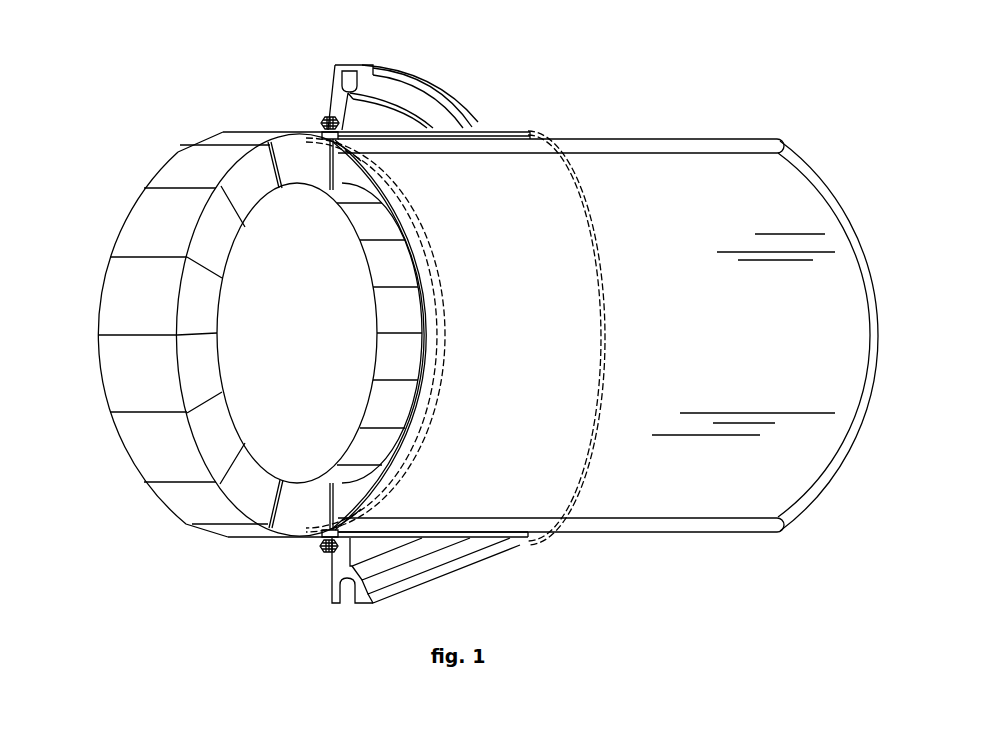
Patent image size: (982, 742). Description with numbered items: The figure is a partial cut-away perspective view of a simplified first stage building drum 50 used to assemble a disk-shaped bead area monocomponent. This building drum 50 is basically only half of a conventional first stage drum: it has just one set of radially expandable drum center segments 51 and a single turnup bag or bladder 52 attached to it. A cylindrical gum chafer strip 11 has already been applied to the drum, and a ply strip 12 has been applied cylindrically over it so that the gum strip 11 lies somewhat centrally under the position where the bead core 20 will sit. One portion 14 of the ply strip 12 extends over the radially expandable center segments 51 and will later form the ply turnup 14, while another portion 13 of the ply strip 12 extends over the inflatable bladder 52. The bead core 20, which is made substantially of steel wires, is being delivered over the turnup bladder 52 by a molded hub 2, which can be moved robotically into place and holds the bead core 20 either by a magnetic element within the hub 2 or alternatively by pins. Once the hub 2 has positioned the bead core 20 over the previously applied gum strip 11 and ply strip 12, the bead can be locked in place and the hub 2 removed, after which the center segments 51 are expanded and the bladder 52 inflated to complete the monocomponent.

The molded hub 2 is at (398, 104).
The gum strip 11 is at (298, 132).
The ply strip 12 is at (527, 128).
The portion of the ply strip 13 is at (537, 136).
The ply turnup 14 is at (270, 132).
The bead core 20 is at (327, 117).
The first stage building drum 50 is at (718, 110).
The drum center segments 51 is at (153, 440).
The turnup bladder 52 is at (723, 162).